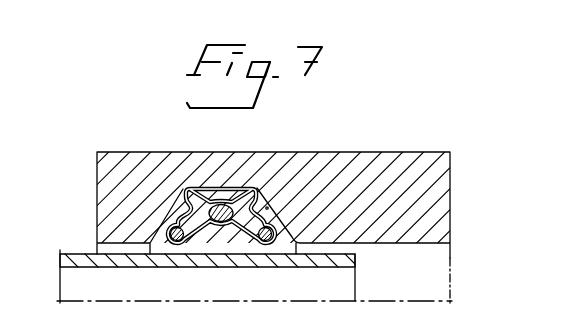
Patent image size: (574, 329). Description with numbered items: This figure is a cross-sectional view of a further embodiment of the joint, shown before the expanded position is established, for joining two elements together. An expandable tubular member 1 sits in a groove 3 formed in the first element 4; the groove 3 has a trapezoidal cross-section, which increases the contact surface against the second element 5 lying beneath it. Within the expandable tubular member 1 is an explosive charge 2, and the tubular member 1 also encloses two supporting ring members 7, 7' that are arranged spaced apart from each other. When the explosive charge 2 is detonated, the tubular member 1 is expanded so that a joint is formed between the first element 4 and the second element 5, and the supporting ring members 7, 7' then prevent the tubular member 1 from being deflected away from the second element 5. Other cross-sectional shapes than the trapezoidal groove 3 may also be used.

The expandable tubular member 1 is at (190, 186).
The explosive charge 2 is at (219, 204).
The groove 3 is at (268, 208).
The first element 4 is at (314, 168).
The second element 5 is at (78, 262).
The supporting ring member 7 is at (174, 275).
The supporting ring member 7' is at (270, 275).